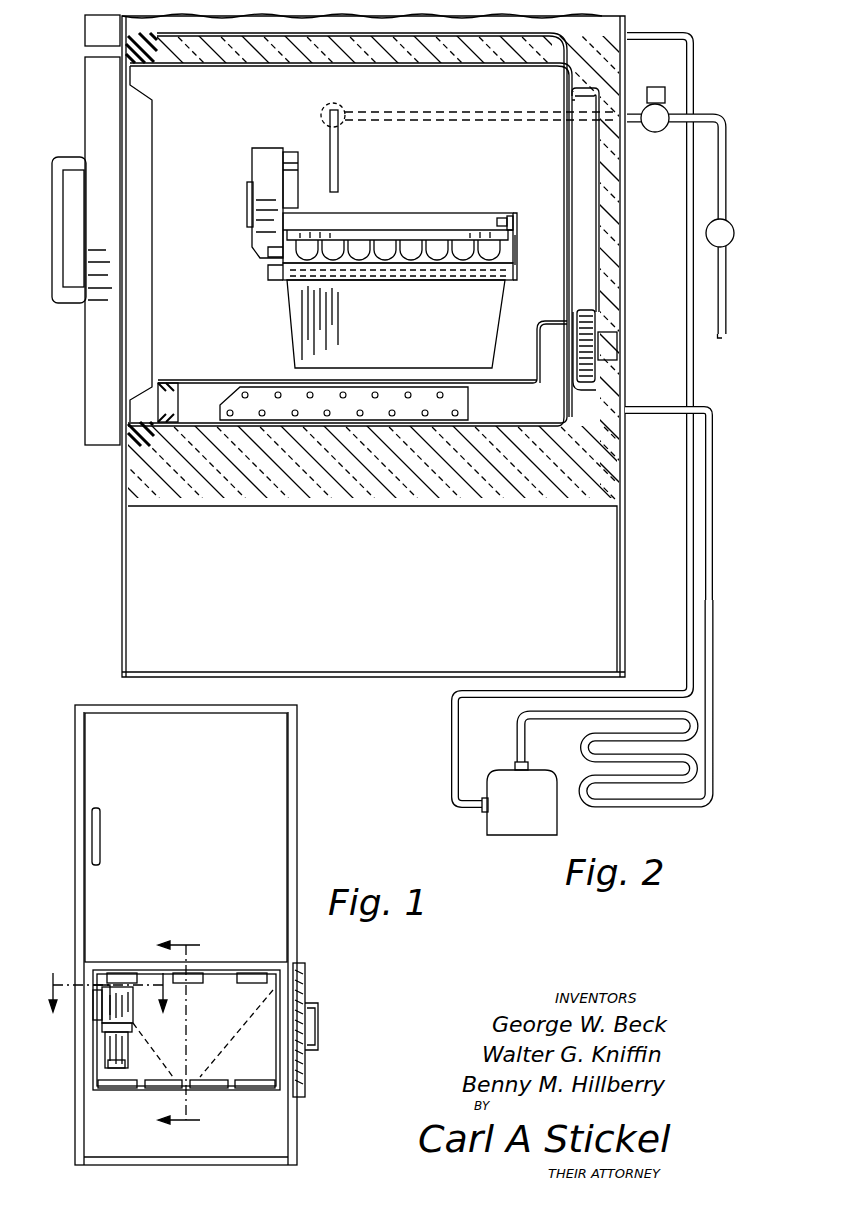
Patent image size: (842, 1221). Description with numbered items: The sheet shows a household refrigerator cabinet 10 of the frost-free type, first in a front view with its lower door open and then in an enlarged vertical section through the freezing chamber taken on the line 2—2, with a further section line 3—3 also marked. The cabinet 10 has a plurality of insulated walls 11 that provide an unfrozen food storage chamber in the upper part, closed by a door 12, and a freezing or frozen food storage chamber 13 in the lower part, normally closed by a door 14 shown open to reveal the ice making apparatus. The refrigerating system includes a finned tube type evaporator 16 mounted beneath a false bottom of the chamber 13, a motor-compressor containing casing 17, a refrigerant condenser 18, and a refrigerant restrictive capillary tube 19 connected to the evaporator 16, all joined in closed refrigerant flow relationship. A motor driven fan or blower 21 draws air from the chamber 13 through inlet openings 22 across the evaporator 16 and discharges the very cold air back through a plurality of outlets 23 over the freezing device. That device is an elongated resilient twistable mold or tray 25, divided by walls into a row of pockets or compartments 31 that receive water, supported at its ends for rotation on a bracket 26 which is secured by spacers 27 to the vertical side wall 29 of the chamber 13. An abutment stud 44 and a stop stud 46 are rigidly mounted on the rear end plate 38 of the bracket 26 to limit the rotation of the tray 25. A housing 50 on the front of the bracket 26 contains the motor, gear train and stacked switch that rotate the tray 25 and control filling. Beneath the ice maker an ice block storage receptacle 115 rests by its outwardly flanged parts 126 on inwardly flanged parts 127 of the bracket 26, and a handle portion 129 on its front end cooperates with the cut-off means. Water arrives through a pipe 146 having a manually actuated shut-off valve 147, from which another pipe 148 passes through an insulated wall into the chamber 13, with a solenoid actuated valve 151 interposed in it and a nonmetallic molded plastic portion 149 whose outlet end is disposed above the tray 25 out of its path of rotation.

In FIG. 2, the household refrigerator cabinet 10 is at (124, 570).
In FIG. 1, the household refrigerator cabinet 10 is at (76, 732).
In FIG. 2, the insulated walls 11 is at (218, 60).
In FIG. 1, the insulated walls 11 is at (95, 980).
In FIG. 2, the door 12 is at (88, 28).
In FIG. 1, the door 12 is at (103, 777).
In FIG. 2, the freezing or frozen food storage chamber 13 is at (200, 293).
In FIG. 1, the freezing or frozen food storage chamber 13 is at (230, 1013).
In FIG. 2, the door 14 is at (88, 84).
In FIG. 1, the door 14 is at (302, 1073).
In FIG. 2, the finned tube type evaporator 16 is at (455, 406).
In FIG. 2, the motor-compressor containing casing 17 is at (505, 778).
In FIG. 2, the refrigerant condenser 18 is at (590, 737).
In FIG. 2, the refrigerant restrictive capillary tube 19 is at (708, 602).
In FIG. 2, the motor driven fan or blower 21 is at (585, 312).
In FIG. 2, the inlet openings 22 is at (175, 405).
In FIG. 1, the inlet openings 22 is at (150, 1088).
In FIG. 2, the outlets 23 is at (568, 100).
In FIG. 1, the outlets 23 is at (125, 975).
In FIG. 2, the freezing device, mold or tray 25 is at (405, 230).
In FIG. 2, the bracket 26 is at (440, 213).
In FIG. 1, the spacers 27 is at (102, 1026).
In FIG. 1, the vertical side wall 29 is at (100, 1058).
In FIG. 2, the pockets or compartments 31 is at (385, 255).
In FIG. 2, the rear end plate of bracket 38 is at (517, 252).
In FIG. 2, the abutment stud 44 is at (497, 222).
In FIG. 2, the stop stud 46 is at (510, 216).
In FIG. 2, the housing 50 is at (268, 152).
In FIG. 1, the housing 50 is at (130, 1000).
In FIG. 1, the ice block storage receptacle 115 is at (116, 1068).
In FIG. 2, the outwardly flanged parts 126 is at (460, 280).
In FIG. 2, the inwardly flanged parts 127 is at (412, 280).
In FIG. 2, the handle portion 129 is at (270, 282).
In FIG. 2, the pipe 146 is at (722, 340).
In FIG. 2, the manually actuated shut-off valve 147 is at (704, 235).
In FIG. 2, the pipe 148 is at (712, 112).
In FIG. 2, the nonmetallic molded plastic portion 149 is at (340, 158).
In FIG. 1, the nonmetallic molded plastic portion 149 is at (105, 985).
In FIG. 2, the solenoid actuated valve 151 is at (665, 134).
In FIG. 1, the section line 2— 2 is at (179, 1031).
In FIG. 1, the section line 3— 3 is at (103, 1005).